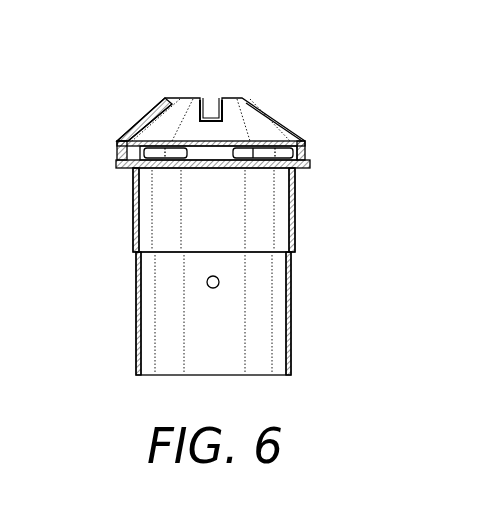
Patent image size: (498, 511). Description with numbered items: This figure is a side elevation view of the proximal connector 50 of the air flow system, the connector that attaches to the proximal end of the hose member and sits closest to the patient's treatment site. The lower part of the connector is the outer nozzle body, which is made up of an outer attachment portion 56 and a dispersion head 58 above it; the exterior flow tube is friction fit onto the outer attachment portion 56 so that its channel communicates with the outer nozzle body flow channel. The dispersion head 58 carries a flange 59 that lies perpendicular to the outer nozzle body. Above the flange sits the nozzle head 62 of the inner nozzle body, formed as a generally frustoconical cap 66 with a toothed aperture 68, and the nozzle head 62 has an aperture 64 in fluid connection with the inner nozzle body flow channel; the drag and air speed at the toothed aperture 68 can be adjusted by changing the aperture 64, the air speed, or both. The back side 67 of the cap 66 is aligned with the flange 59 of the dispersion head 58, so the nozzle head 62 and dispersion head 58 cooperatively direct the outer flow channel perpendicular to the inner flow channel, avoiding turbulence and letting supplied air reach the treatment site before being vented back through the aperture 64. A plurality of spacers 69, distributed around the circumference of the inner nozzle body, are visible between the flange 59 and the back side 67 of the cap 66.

The proximal connector 50 is at (205, 223).
The outer attachment portion 56 is at (283, 330).
The dispersion head 58 is at (133, 230).
The flange 59 is at (306, 168).
The nozzle head 62 is at (252, 99).
The aperture 64 is at (212, 102).
The frustoconical cap 66 is at (133, 128).
The back side 67 is at (117, 150).
The toothed aperture 68 is at (160, 103).
The spacers 69 is at (305, 148).